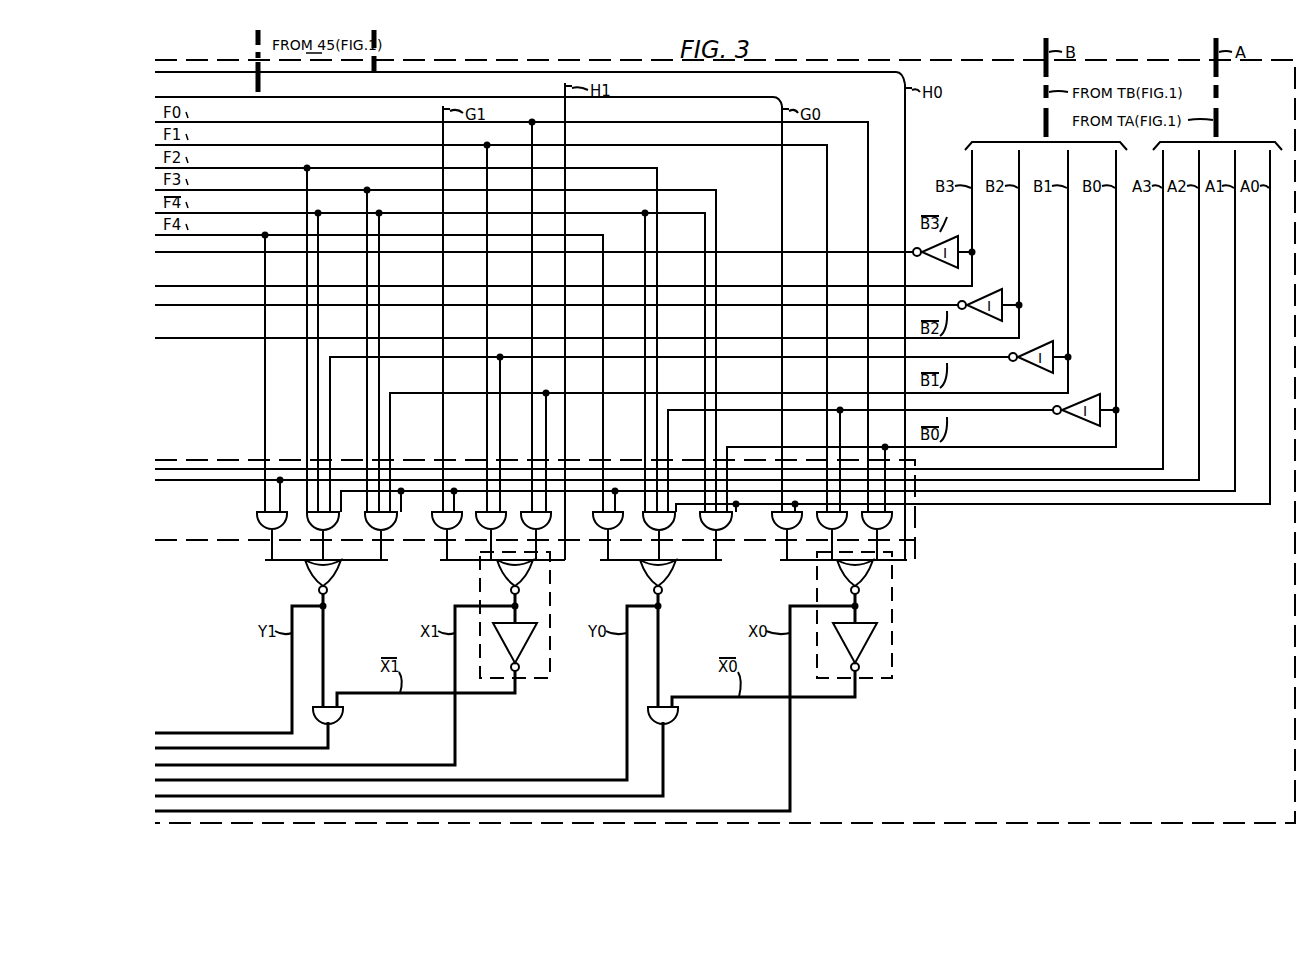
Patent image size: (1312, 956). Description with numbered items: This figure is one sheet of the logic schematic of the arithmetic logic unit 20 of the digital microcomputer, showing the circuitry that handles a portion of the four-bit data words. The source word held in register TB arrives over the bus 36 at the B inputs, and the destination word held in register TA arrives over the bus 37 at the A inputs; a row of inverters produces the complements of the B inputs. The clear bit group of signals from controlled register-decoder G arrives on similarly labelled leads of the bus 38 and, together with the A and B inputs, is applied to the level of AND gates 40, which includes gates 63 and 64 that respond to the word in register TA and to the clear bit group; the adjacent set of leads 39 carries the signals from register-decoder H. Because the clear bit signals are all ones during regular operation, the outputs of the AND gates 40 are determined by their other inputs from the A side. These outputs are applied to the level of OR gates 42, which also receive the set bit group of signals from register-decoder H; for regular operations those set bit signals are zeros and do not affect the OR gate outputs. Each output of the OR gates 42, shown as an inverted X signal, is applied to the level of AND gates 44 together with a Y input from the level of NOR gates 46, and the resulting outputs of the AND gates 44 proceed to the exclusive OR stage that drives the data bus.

The arithmetic logic unit 20 is at (1135, 743).
The bus 36 is at (1044, 110).
The bus 37 is at (1219, 104).
The bus 38 is at (256, 42).
The function control input post 39 is at (377, 40).
The level of AND gates 40 is at (172, 537).
The level of OR gates 42 is at (550, 677).
The level of AND gates 44 is at (338, 722).
The level of NOR gates 46 is at (336, 578).
The gate 63 is at (436, 526).
The gate 64 is at (774, 526).